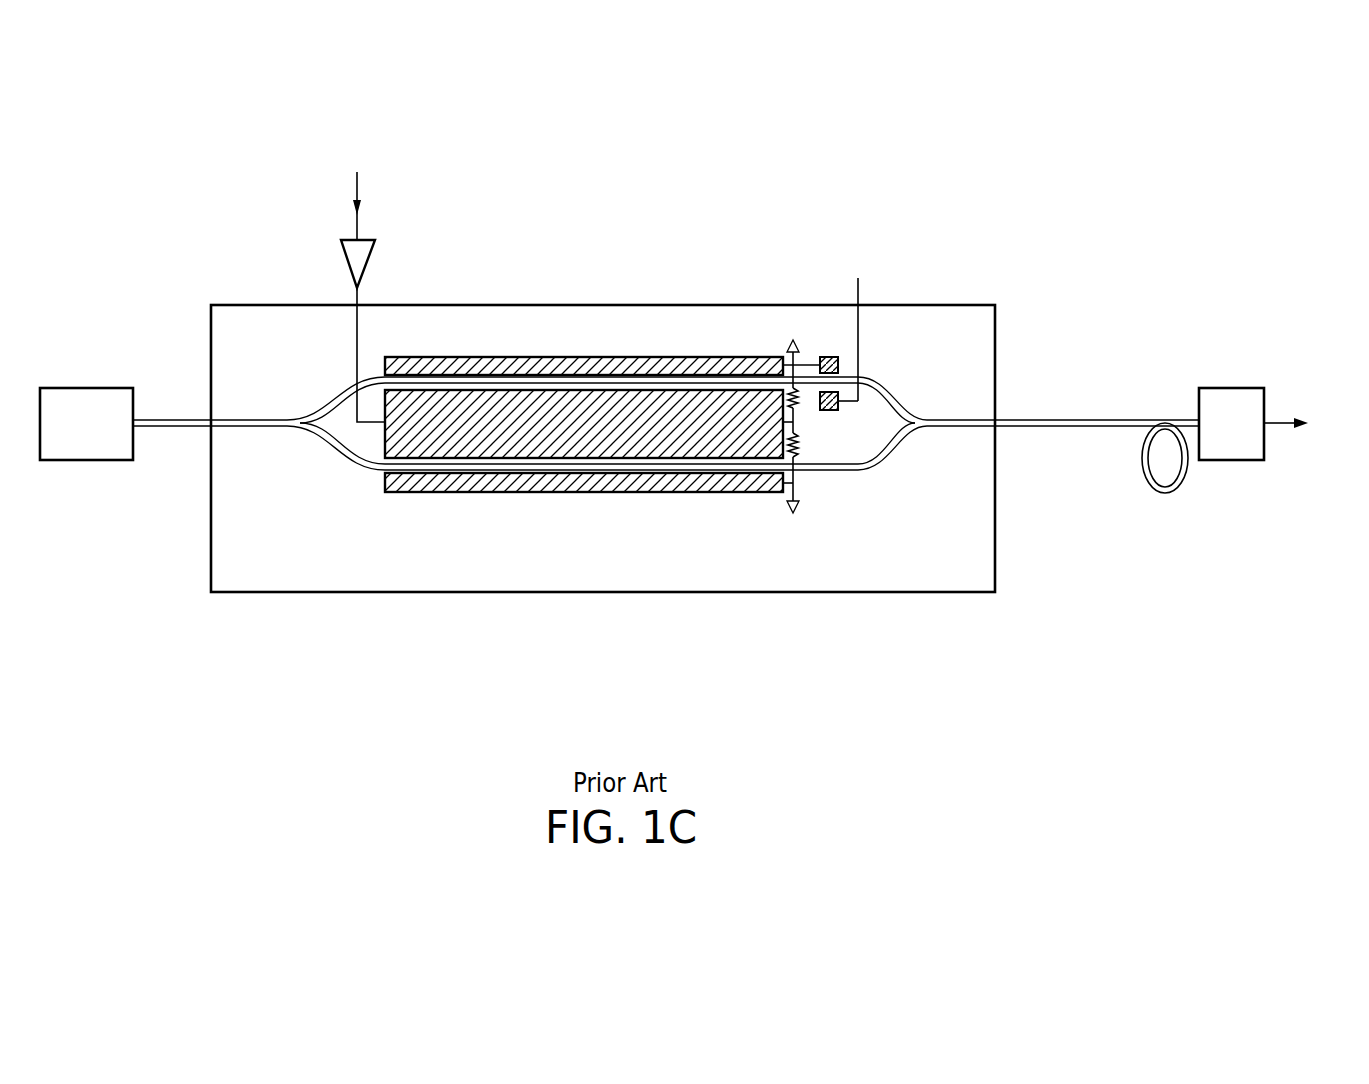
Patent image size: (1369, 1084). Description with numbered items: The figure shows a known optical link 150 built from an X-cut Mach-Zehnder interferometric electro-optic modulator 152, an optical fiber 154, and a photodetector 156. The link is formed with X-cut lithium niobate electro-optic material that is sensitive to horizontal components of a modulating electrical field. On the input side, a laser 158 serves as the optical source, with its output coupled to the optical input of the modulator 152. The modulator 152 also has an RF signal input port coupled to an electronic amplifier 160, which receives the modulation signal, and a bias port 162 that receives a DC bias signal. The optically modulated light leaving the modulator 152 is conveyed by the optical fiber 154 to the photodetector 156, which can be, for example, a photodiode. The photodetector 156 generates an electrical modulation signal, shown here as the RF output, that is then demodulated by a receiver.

The optical link 150 is at (614, 191).
The electro-optic modulator 152 is at (565, 339).
The optical fiber 154 is at (1165, 493).
The photodetector 156 is at (1210, 450).
The laser 158 is at (65, 450).
The electronic amplifier 160 is at (373, 255).
The bias port 162 is at (865, 242).